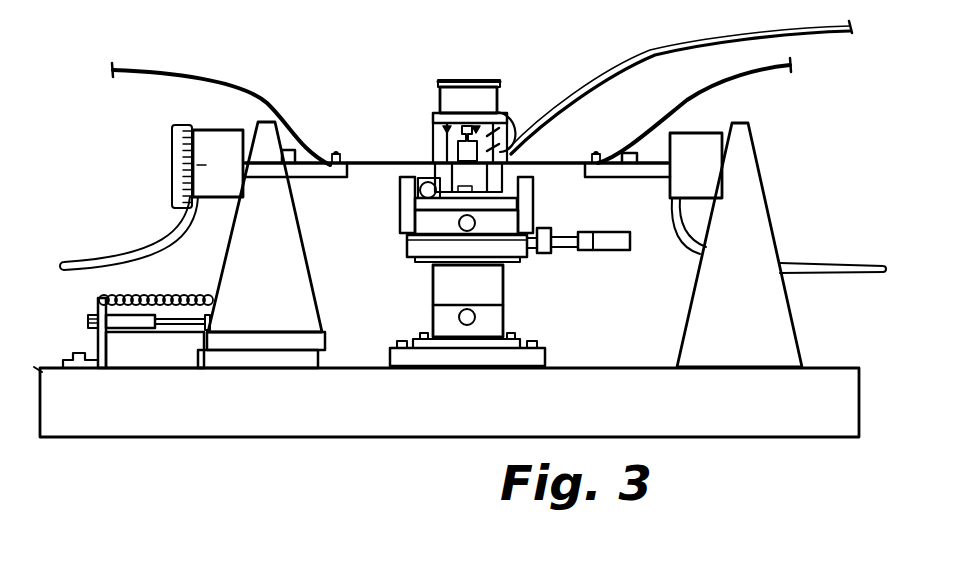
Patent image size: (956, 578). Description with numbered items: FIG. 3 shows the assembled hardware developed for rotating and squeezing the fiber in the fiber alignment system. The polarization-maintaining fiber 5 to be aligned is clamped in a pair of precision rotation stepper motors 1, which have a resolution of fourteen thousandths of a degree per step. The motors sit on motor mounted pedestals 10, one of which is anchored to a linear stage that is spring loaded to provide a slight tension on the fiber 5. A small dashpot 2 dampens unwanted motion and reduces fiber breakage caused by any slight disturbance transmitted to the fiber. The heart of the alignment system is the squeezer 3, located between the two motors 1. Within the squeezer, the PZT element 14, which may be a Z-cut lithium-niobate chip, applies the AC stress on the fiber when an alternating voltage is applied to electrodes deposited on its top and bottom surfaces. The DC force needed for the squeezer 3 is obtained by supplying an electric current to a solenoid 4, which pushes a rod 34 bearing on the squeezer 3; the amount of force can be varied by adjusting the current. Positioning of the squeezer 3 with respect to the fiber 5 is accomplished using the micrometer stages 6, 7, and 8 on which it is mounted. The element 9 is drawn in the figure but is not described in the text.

The precision rotation stepper motors 1 is at (207, 128).
The dashpot 2 is at (125, 322).
The squeezer 3 is at (463, 150).
The solenoid 4 is at (437, 100).
The polarization-maintaining fiber 5 is at (387, 168).
The micrometer stage 6 is at (475, 223).
The micrometer stage 7 is at (612, 252).
The micrometer stage 8 is at (475, 317).
The leaf spring strip 9 is at (807, 30).
The motor mounted pedestals 10 is at (280, 287).
The PZT element 14 is at (503, 170).
The rod 34 is at (497, 110).